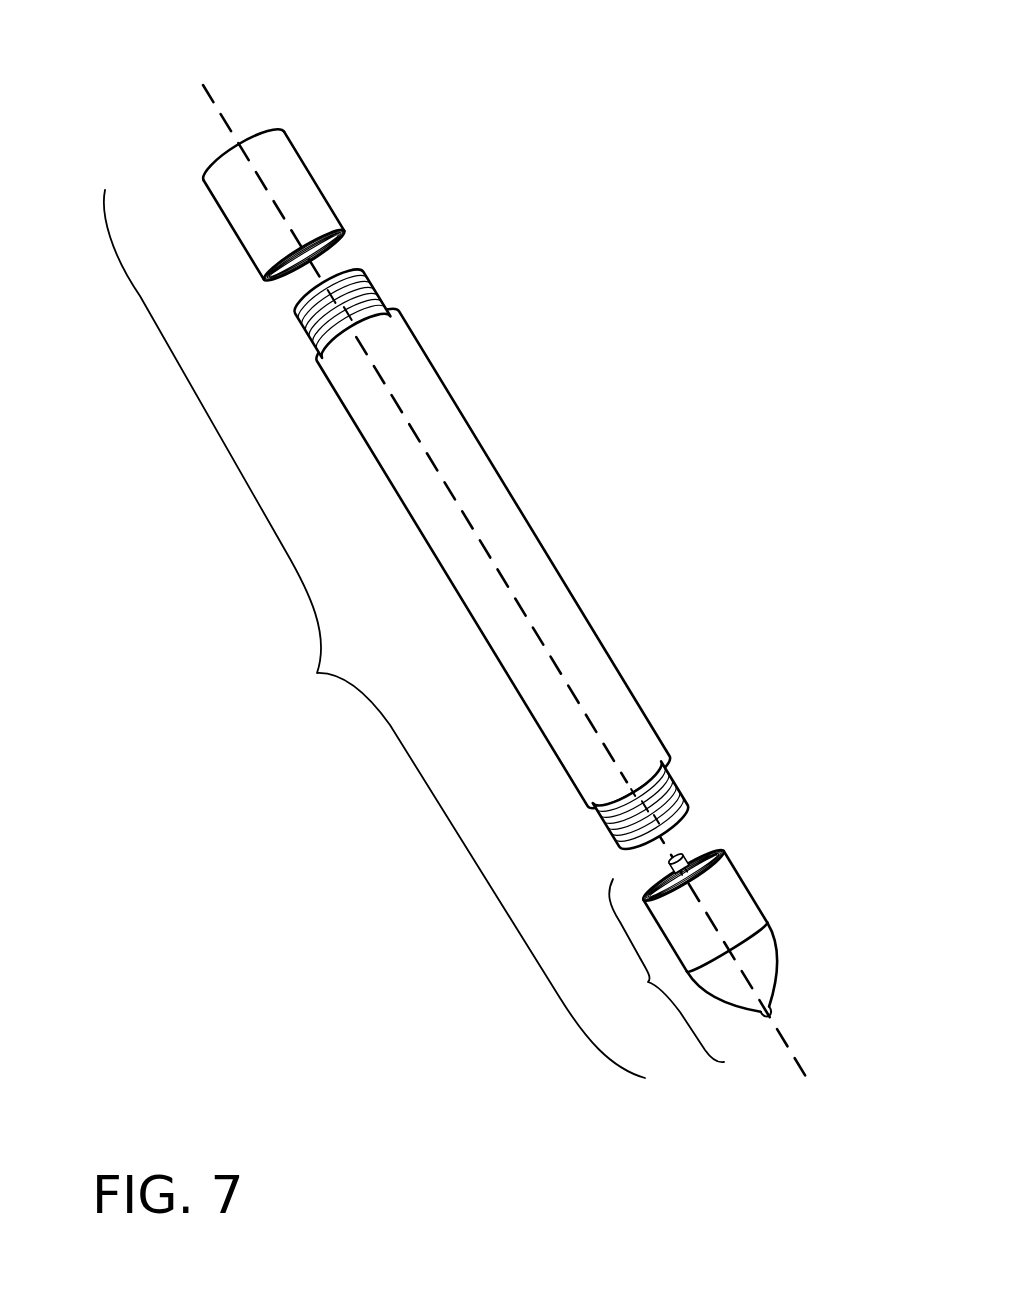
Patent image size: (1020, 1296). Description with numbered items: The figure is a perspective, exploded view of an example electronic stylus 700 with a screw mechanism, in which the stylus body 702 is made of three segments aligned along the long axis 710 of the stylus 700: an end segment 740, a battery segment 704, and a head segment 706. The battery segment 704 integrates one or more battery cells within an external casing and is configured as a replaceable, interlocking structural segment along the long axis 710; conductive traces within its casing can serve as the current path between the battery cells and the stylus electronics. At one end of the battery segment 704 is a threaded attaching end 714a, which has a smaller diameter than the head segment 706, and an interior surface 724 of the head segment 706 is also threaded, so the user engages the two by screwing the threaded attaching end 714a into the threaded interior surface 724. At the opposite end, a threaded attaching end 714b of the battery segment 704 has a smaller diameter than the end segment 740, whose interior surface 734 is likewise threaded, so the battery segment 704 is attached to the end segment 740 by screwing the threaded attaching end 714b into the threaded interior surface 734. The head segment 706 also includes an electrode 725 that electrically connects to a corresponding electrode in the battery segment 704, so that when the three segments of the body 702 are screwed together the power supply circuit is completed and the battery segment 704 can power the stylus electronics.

The stylus 700 is at (150, 44).
The body 702 is at (374, 634).
The battery segment 704 is at (488, 459).
The head segment 706 is at (707, 953).
The long axis 710 is at (215, 102).
The threaded attaching end 714a is at (715, 766).
The threaded attaching end 714b is at (400, 268).
The interior surface 724 is at (657, 877).
The electrode 725 is at (688, 852).
The interior surface 734 is at (340, 238).
The end segment 740 is at (310, 167).